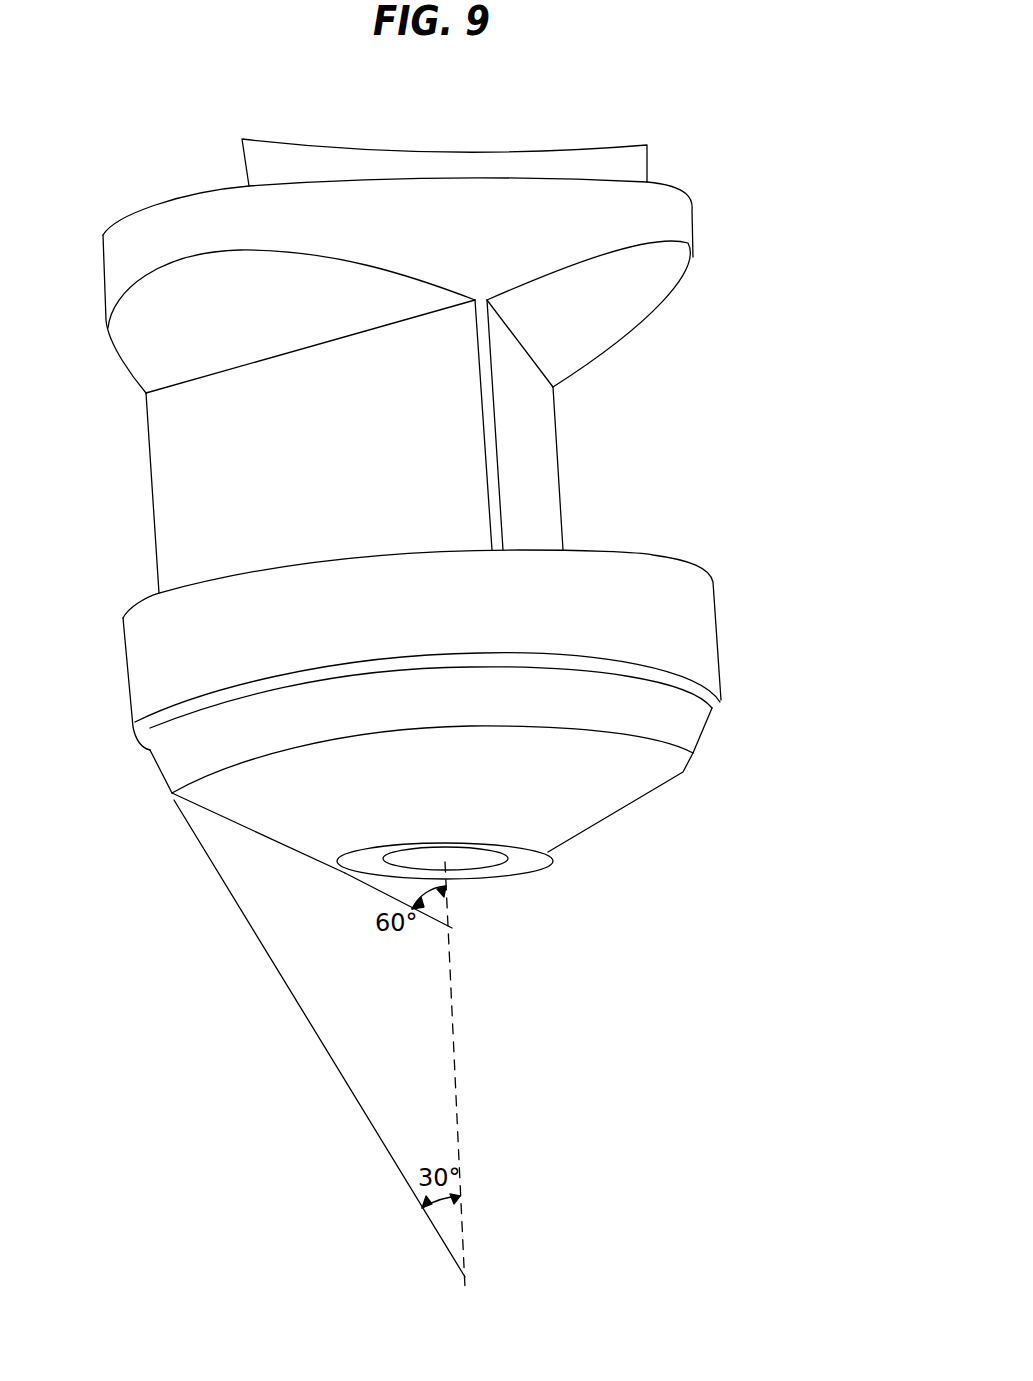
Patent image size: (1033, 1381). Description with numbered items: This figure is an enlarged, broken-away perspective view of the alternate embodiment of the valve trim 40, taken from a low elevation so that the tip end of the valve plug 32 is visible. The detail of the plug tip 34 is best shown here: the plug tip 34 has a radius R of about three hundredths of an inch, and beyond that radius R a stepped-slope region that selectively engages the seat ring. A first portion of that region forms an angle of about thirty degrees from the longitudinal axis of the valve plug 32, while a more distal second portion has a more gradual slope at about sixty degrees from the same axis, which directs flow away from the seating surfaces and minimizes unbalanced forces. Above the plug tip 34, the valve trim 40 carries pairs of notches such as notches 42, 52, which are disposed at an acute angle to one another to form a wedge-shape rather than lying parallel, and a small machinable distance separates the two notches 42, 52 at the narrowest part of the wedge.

The valve trim 40 is at (652, 131).
The notch 52 is at (645, 402).
The notch 42 is at (168, 488).
The plug tip 34 is at (721, 703).
The valve plug 32 is at (617, 788).
The plug tip radius R is at (720, 700).